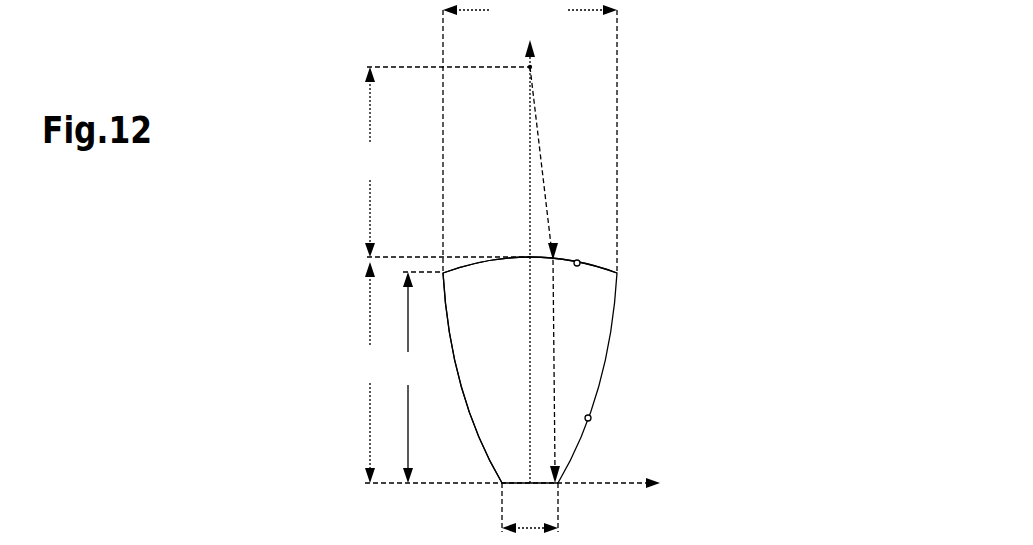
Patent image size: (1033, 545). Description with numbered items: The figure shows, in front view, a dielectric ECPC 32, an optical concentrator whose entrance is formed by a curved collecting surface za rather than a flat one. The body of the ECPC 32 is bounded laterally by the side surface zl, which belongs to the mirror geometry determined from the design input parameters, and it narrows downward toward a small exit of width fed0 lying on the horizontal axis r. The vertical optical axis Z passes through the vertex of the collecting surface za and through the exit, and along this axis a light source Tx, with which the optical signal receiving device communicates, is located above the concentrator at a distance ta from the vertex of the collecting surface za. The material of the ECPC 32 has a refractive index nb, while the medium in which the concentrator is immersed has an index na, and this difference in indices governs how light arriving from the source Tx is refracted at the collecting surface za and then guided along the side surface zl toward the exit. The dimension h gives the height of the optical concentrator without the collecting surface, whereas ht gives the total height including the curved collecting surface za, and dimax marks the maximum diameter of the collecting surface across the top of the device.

The dielectric ECPC 32 is at (630, 253).
The radial axis r is at (521, 482).
The optical axis Z is at (520, 253).
The light source Tx is at (530, 67).
The maximum lens diameter dimax is at (530, 13).
The distance between vertex of collecting surface and light source ta is at (368, 162).
The total height ht is at (368, 372).
The height of the optical concentrator without the collecting surface h is at (408, 377).
The exit surface diameter fed0 is at (530, 511).
The refractive index of the concentrator material nb is at (472, 378).
The index of the surrounding medium na is at (550, 275).
The curved collecting surface za is at (579, 260).
The side surface zl is at (591, 418).